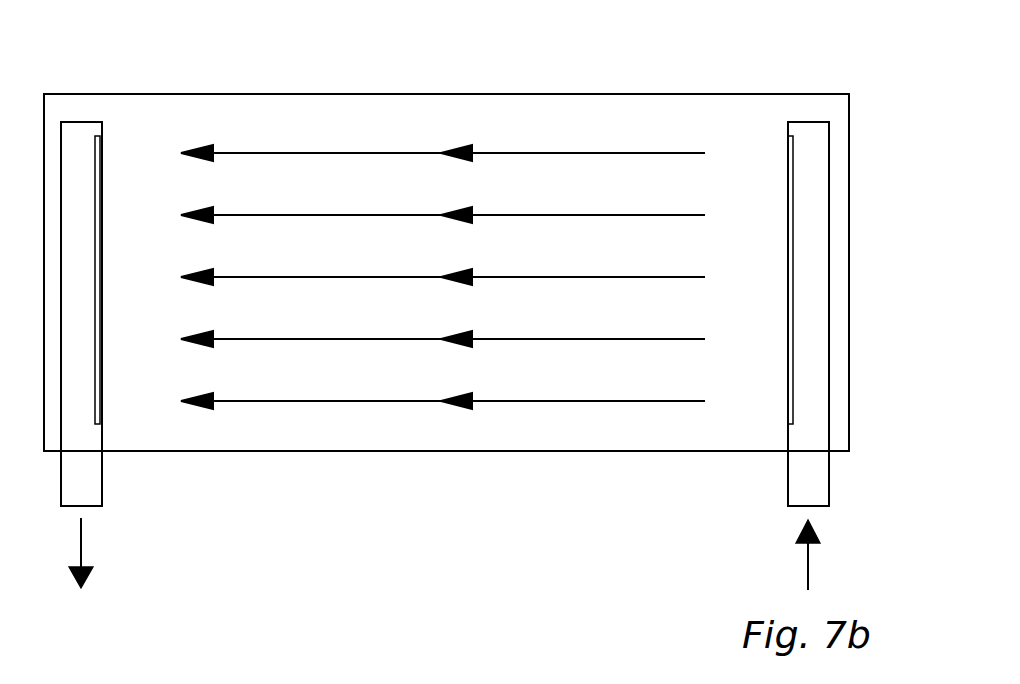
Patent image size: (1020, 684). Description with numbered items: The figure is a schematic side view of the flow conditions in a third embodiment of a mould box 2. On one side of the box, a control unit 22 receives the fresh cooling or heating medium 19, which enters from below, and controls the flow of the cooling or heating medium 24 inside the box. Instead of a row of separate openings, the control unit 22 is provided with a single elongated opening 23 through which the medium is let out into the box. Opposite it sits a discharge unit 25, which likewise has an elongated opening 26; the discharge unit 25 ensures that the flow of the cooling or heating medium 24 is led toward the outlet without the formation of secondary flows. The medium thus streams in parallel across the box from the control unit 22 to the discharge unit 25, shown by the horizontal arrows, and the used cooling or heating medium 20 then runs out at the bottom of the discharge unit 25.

The mould box 2 is at (380, 486).
The fresh cooling or heating medium 19 is at (806, 558).
The used cooling or heating medium 20 is at (83, 542).
The control unit 22 is at (817, 122).
The elongated opening 23 is at (792, 240).
The cooling or heating medium 24 is at (563, 216).
The discharge unit 25 is at (75, 122).
The elongated opening 26 is at (97, 248).